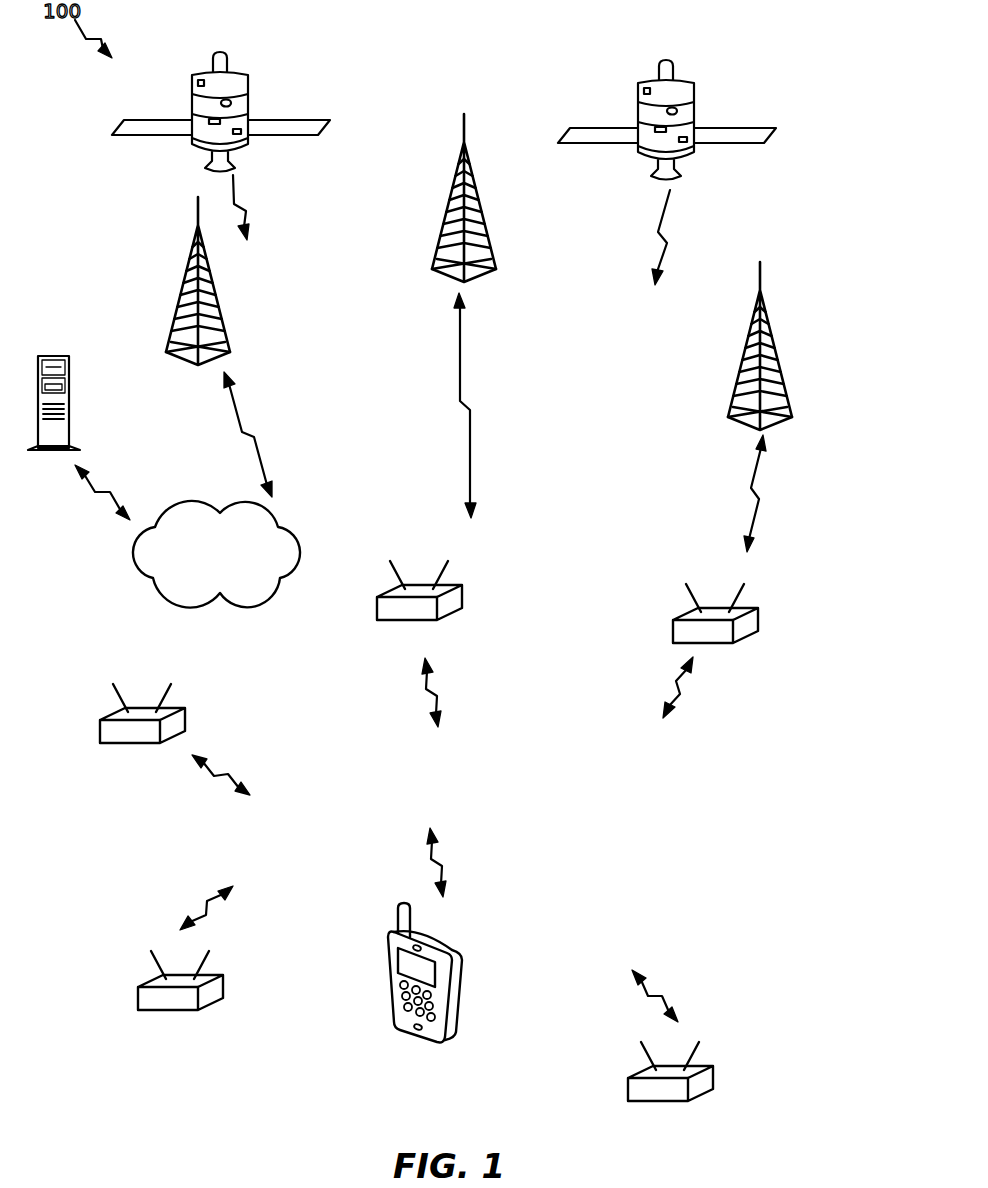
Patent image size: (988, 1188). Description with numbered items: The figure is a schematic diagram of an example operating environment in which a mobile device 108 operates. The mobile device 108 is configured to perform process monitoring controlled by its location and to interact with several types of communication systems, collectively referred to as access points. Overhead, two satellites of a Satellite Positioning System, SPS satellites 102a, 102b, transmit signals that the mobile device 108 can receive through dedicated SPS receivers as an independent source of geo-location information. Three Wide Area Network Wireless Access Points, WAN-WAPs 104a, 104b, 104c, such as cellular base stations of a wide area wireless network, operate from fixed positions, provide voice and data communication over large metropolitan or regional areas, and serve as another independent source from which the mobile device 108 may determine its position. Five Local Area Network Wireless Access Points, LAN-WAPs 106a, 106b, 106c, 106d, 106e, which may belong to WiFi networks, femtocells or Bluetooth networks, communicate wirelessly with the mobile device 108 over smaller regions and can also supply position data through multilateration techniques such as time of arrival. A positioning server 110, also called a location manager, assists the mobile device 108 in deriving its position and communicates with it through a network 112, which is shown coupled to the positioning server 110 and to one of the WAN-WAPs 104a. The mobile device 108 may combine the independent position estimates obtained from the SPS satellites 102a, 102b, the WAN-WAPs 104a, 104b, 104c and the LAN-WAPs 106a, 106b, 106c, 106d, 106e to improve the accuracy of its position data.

The SPS satellite 102a is at (251, 88).
The SPS satellite 102b is at (695, 94).
The Wide Area Network Wireless Access Point 104a is at (196, 245).
The Wide Area Network Wireless Access Point 104b is at (469, 146).
The Wide Area Network Wireless Access Point 104c is at (769, 330).
The Local Area Network Wireless Access Point 106a is at (185, 715).
The Local Area Network Wireless Access Point 106b is at (463, 588).
The Local Area Network Wireless Access Point 106c is at (672, 624).
The Local Area Network Wireless Access Point 106d is at (139, 990).
The Local Area Network Wireless Access Point 106e is at (628, 1082).
The mobile device 108 is at (464, 955).
The positioning server 110 is at (69, 360).
The network 112 is at (193, 500).